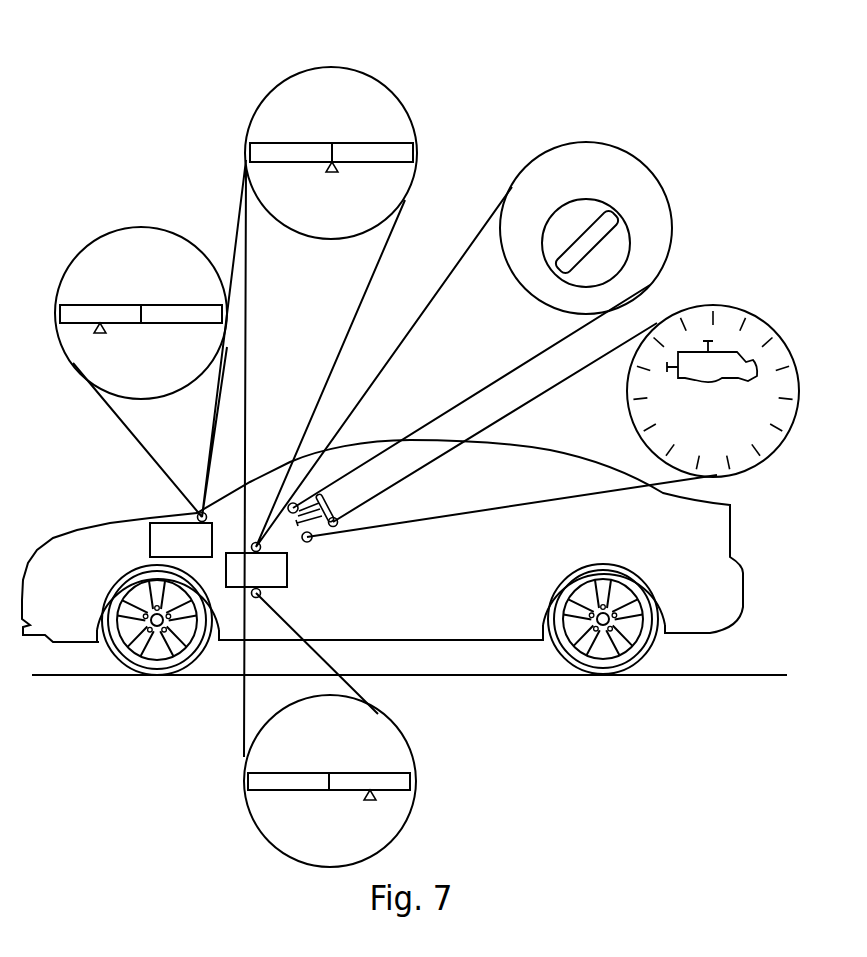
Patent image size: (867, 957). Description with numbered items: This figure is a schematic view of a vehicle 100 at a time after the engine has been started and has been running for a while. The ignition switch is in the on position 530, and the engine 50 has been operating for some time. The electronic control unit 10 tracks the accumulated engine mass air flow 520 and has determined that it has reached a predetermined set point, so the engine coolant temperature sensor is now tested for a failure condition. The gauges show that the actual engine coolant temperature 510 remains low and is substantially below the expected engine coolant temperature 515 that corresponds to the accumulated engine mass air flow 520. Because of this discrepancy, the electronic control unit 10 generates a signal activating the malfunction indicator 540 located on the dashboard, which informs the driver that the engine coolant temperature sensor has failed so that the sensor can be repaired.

The vehicle 100 is at (747, 523).
The electronic control unit 10 is at (248, 579).
The engine 50 is at (167, 550).
The actual engine coolant temperature 510 is at (162, 228).
The expected engine coolant temperature 515 is at (417, 780).
The accumulated engine mass air flow 520 is at (335, 68).
The ignition switch on position 530 is at (667, 198).
The malfunction indicator 540 is at (713, 305).